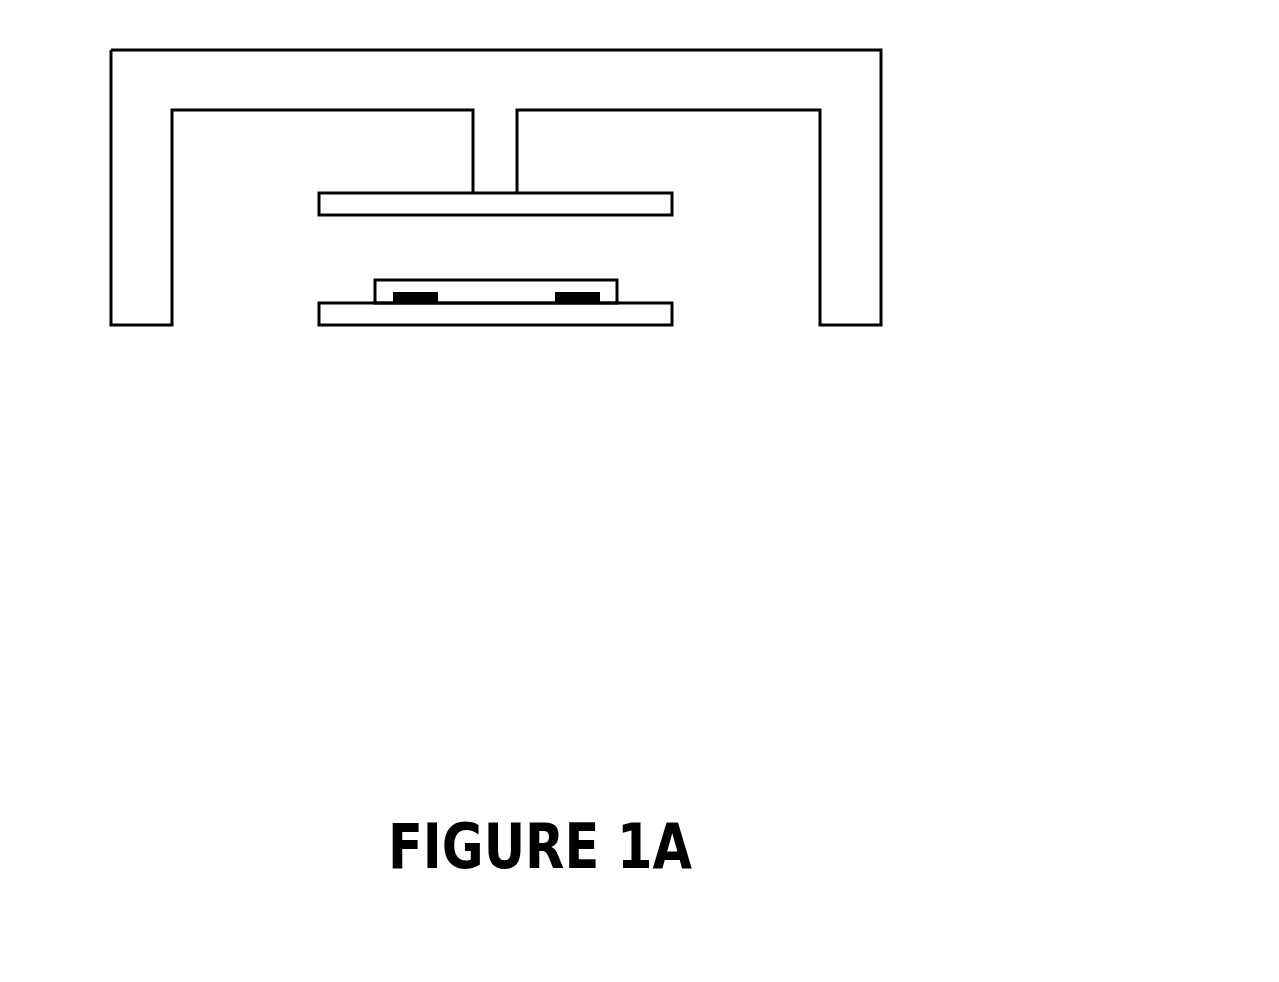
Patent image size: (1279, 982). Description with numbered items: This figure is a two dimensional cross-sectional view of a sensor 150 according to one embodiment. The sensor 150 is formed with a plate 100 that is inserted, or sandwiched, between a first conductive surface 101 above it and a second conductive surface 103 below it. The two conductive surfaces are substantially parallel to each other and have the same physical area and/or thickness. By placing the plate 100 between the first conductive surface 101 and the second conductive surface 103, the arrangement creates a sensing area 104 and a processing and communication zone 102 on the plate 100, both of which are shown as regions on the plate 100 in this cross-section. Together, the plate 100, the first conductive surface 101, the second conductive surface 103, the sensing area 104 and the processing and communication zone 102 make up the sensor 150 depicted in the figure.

The plate 100 is at (617, 292).
The first conductive surface 101 is at (666, 206).
The processing and communication zone 102 is at (410, 303).
The second conductive surface 103 is at (666, 316).
The sensing area 104 is at (547, 293).
The sensor 150 is at (862, 690).